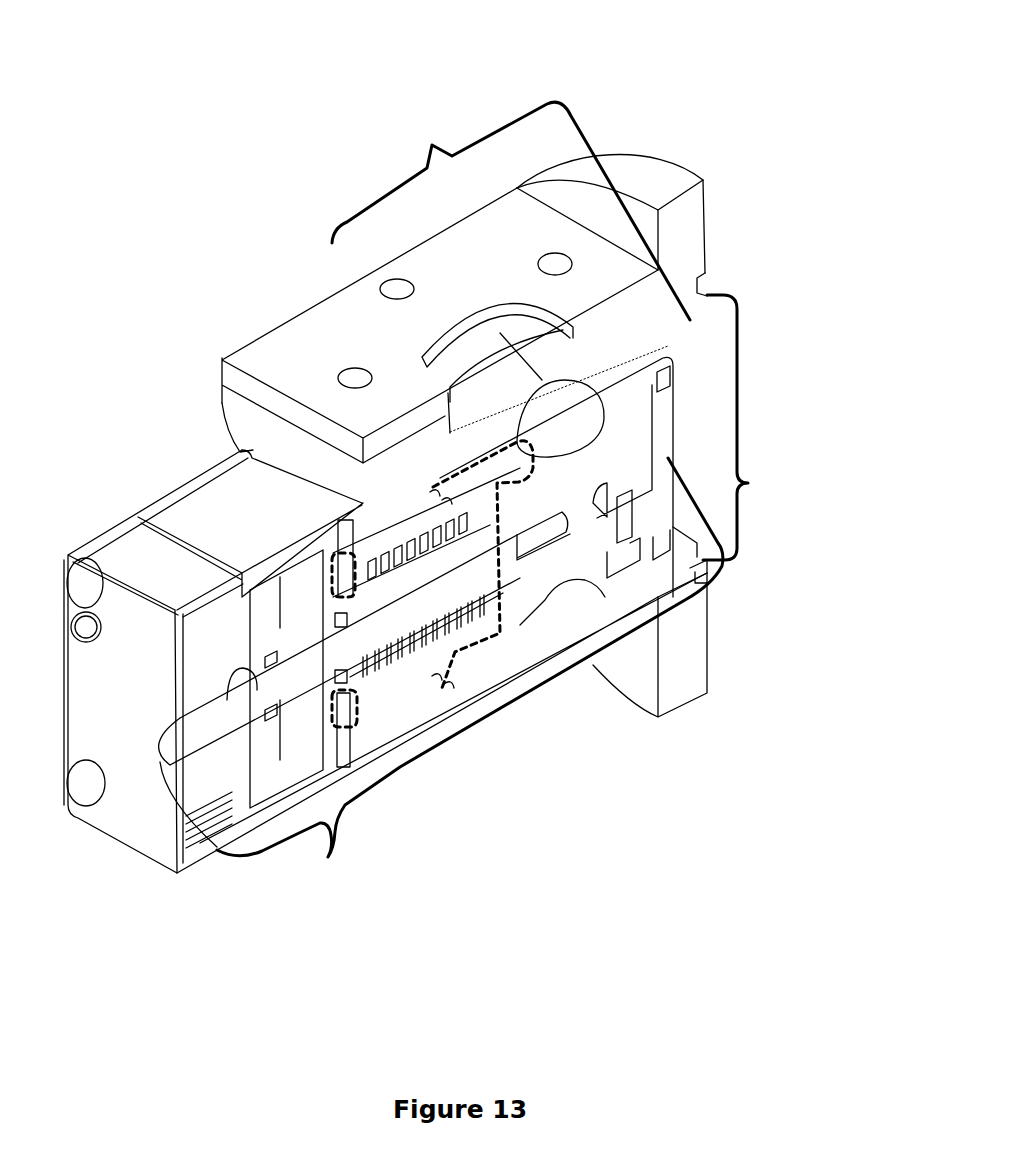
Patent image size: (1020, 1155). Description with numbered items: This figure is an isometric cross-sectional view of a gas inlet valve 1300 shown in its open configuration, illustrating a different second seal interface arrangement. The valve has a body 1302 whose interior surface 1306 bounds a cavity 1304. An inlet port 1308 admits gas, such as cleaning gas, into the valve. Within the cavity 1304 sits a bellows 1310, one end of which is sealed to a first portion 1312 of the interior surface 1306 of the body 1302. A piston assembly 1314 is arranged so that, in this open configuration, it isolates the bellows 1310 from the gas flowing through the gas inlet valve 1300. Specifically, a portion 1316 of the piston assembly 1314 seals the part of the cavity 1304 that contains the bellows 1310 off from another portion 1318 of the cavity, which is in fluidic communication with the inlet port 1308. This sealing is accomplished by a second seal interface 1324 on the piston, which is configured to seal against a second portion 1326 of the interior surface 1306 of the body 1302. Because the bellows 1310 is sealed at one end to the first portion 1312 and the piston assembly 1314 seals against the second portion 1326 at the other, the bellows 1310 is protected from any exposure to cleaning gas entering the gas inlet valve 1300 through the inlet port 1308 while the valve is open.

The gas inlet valve 1300 is at (575, 74).
The body 1302 is at (330, 331).
The cavity 1304 is at (749, 439).
The interior surface 1306 is at (563, 618).
The inlet port 1308 is at (464, 346).
The bellows 1310 is at (412, 682).
The first portion of the interior surface 1312 is at (343, 600).
The piston assembly 1314 is at (393, 670).
The portion of the piston assembly 1316 is at (515, 640).
The another portion of the cavity 1318 is at (511, 211).
The second seal interface 1324 is at (428, 667).
The second portion of the interior surface 1326 is at (438, 674).